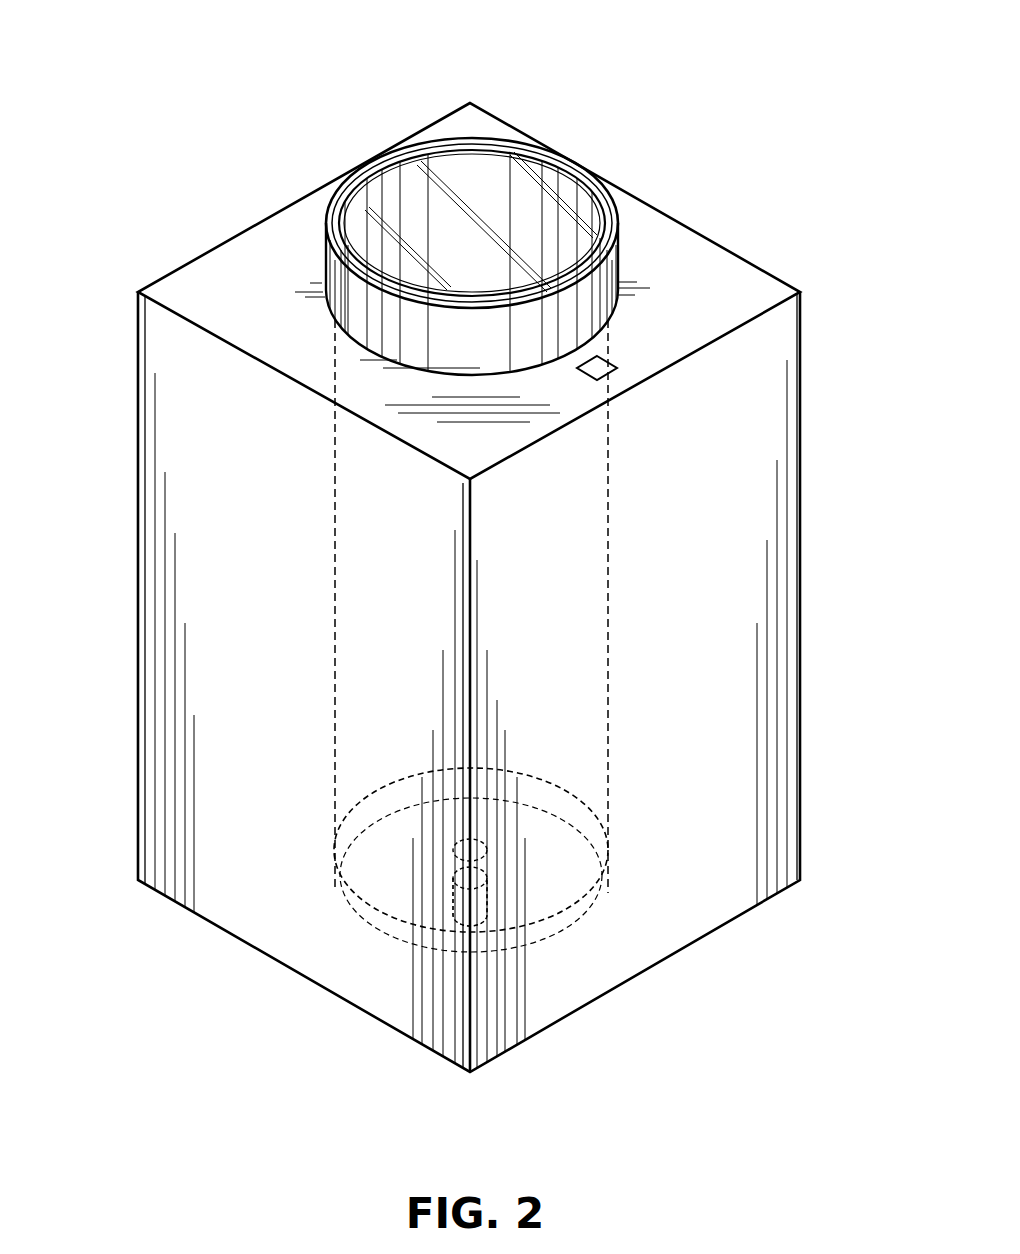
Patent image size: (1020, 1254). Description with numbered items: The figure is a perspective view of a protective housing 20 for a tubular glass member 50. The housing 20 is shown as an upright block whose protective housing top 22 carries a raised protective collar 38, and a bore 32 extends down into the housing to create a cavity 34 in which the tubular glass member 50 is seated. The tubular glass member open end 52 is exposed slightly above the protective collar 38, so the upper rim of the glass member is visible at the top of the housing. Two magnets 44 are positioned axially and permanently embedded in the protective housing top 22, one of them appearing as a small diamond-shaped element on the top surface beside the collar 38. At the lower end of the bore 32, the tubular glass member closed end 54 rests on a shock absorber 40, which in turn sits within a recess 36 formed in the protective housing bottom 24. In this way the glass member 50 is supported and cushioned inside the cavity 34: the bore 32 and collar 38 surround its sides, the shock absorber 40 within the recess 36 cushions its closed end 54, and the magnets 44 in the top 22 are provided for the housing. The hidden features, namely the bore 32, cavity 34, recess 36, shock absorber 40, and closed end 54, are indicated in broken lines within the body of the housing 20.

The protective housing 20 is at (227, 732).
The protective housing top 22 is at (683, 262).
The protective housing bottom 24 is at (355, 1008).
The bore 32 is at (328, 500).
The cavity 34 is at (545, 615).
The recess 36 is at (495, 903).
The protective collar 38 is at (445, 332).
The shock absorber 40 is at (463, 862).
The magnets 44 is at (318, 210).
The tubular glass member 50 is at (580, 178).
The tubular glass member open end 52 is at (451, 160).
The tubular glass member closed end 54 is at (395, 912).